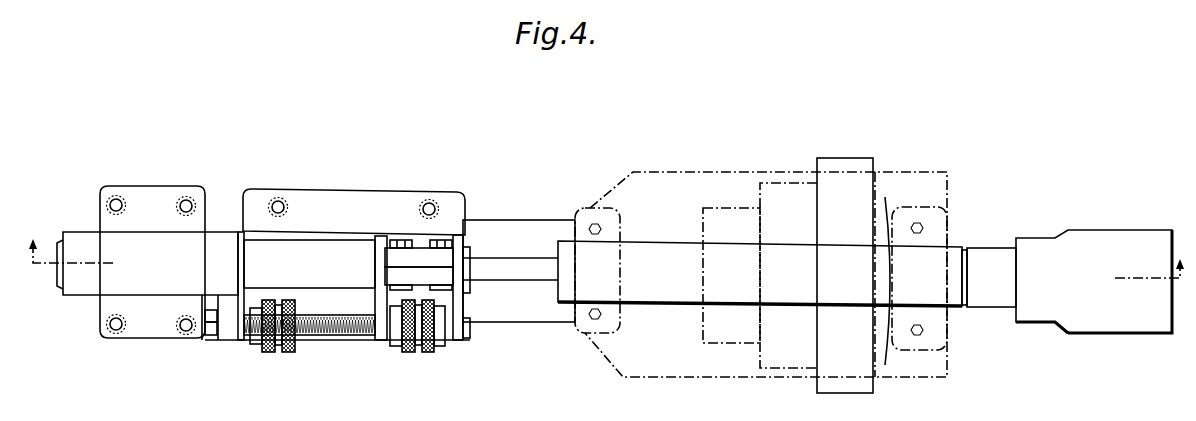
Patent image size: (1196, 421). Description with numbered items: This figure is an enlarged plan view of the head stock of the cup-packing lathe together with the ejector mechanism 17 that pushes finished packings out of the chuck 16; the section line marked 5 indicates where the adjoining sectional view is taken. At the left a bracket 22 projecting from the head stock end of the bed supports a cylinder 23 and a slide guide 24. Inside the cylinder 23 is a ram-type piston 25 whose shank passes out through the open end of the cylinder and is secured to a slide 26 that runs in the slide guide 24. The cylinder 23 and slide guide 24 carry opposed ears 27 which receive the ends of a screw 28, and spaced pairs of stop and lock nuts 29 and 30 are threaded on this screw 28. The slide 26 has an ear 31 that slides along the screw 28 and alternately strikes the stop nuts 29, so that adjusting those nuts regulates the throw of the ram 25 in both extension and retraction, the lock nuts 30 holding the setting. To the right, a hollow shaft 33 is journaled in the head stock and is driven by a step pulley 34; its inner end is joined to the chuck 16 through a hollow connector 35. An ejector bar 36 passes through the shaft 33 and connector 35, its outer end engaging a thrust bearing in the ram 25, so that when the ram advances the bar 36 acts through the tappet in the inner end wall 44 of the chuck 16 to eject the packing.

The section line 5- 5 is at (610, 247).
The rotatable chuck 16 is at (1111, 230).
The ejector mechanism 17 is at (282, 238).
The bracket 22 is at (534, 311).
The cylinder 23 is at (147, 263).
The slide guide 24 is at (385, 203).
The ram-type piston 25 is at (306, 286).
The slide 26 is at (431, 258).
The ears 27 is at (231, 336).
The screw 28 is at (356, 333).
The stop nuts 29 is at (289, 352).
The lock nuts 30 is at (270, 352).
The ear 31 is at (386, 341).
The hollow shaft 33 is at (760, 274).
The step pulley 34 is at (850, 175).
The connector 35 is at (985, 256).
The ejector bar 36 is at (510, 272).
The inner end wall 44 is at (1043, 316).